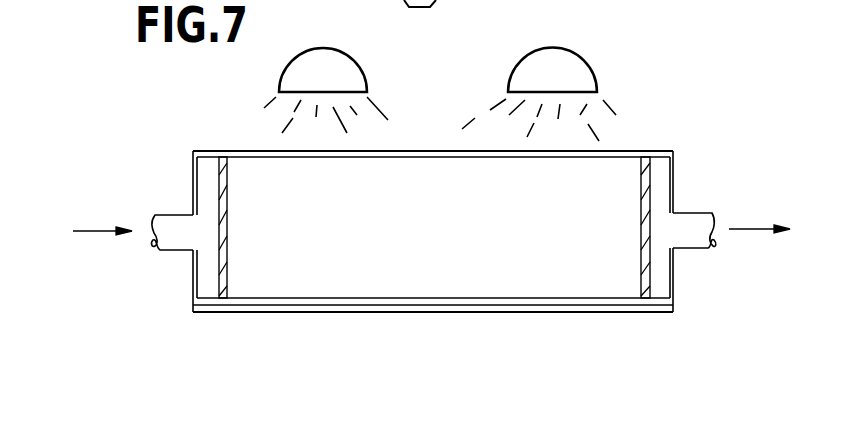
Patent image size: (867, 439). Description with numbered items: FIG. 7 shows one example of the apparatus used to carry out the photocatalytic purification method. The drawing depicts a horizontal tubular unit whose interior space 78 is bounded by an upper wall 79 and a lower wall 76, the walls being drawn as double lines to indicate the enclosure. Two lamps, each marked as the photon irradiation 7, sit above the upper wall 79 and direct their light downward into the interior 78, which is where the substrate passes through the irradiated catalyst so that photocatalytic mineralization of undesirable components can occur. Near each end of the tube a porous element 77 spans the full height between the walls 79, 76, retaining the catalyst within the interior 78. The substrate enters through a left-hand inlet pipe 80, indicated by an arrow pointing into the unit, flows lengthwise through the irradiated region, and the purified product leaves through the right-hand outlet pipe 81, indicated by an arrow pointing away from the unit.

The photon irradiation 7 is at (312, 80).
The tube bottom wall 76 is at (268, 305).
The filter element 77 is at (219, 292).
The chamber 78 is at (463, 248).
The tube top wall 79 is at (243, 151).
The inlet pipe 80 is at (177, 250).
The outlet pipe 81 is at (688, 250).